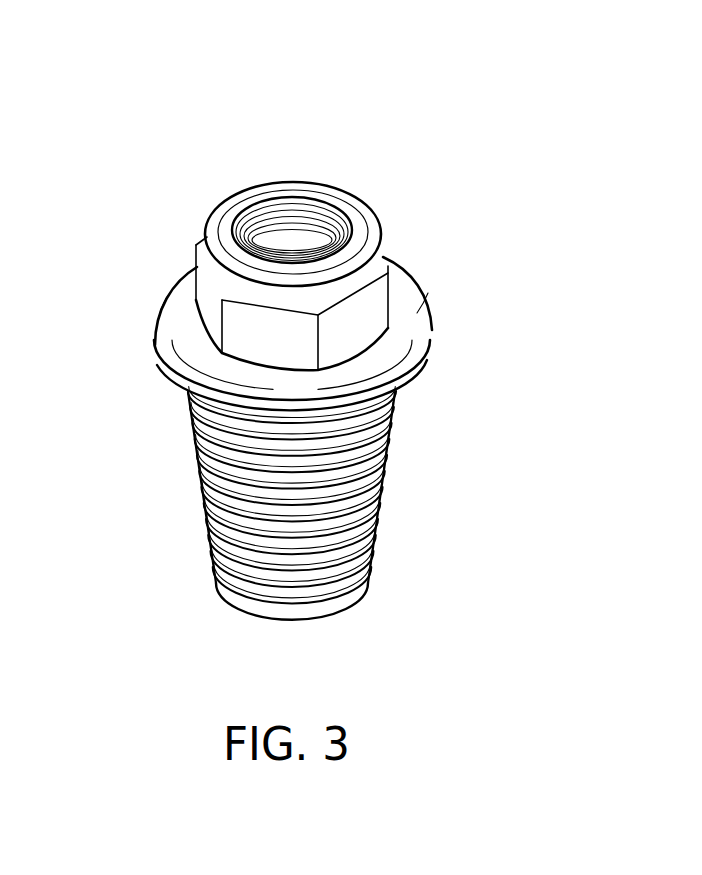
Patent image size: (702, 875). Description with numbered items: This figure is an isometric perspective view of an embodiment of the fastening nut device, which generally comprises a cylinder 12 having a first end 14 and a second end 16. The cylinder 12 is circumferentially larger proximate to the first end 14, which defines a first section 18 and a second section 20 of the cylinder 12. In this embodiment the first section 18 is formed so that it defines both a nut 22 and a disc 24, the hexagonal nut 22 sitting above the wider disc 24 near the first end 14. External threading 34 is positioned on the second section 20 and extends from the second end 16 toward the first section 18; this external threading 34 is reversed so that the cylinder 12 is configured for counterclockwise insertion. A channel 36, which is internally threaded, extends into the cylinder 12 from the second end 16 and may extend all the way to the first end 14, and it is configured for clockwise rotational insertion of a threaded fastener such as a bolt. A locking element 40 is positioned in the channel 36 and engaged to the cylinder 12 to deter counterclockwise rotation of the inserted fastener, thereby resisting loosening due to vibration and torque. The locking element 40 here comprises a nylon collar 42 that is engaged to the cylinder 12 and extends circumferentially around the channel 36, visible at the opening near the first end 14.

The cylinder 12 is at (250, 110).
The first end 14 is at (293, 182).
The second end 16 is at (322, 622).
The first section 18 is at (202, 283).
The second section 20 is at (242, 483).
The nut 22 is at (375, 295).
The disc 24 is at (422, 327).
The external threading 34 is at (385, 527).
The channel 36 is at (274, 243).
The locking element 40 is at (318, 192).
The nylon collar 42 is at (347, 207).